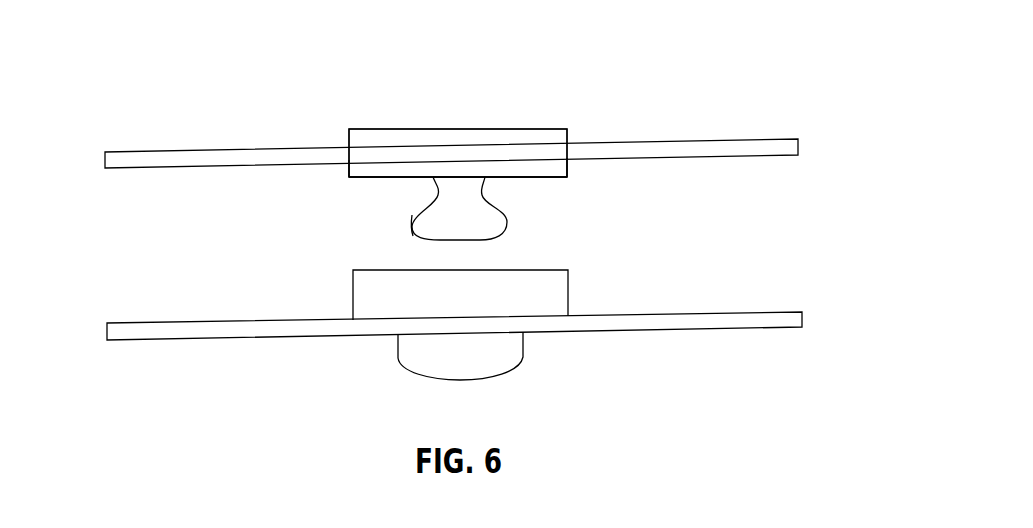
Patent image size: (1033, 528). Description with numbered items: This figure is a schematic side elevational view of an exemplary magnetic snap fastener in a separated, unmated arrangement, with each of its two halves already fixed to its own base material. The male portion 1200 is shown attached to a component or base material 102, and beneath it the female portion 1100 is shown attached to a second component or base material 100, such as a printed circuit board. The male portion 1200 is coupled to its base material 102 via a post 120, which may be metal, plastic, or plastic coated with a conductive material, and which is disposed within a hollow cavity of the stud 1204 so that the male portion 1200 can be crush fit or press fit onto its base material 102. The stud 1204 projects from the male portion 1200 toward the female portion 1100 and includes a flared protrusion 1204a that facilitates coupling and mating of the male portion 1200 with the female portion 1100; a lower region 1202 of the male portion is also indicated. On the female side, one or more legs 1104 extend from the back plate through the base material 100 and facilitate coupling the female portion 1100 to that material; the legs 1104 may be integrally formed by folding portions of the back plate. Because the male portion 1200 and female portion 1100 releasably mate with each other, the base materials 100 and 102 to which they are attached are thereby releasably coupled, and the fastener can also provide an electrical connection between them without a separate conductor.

The component or base material 100 is at (245, 338).
The component or base material 102 is at (193, 148).
The post 120 is at (555, 128).
The female portion 1100 is at (338, 289).
The legs 1104 is at (515, 368).
The male portion 1200 is at (398, 115).
The lower die portion 1202 is at (368, 178).
The stud 1204 is at (507, 217).
The flared protrusion 1204a is at (412, 227).